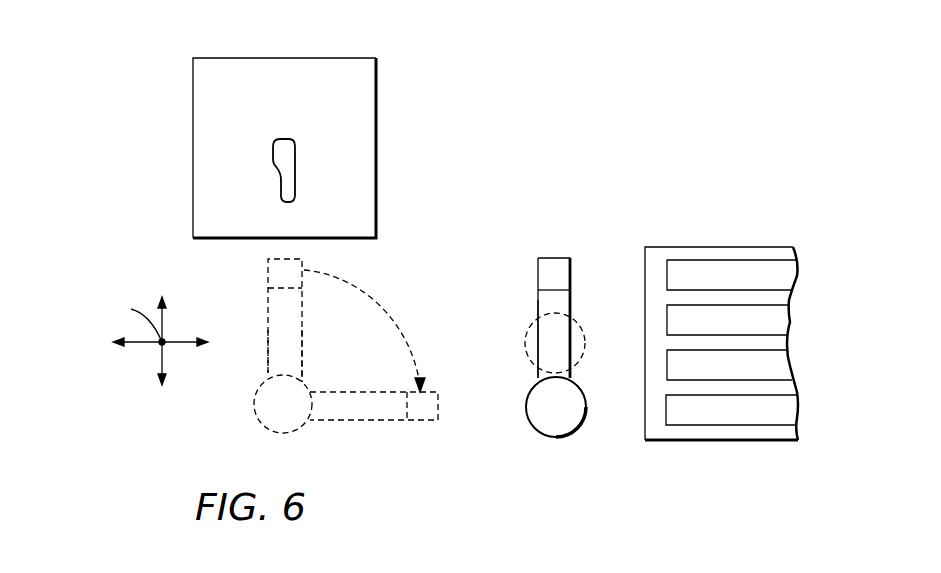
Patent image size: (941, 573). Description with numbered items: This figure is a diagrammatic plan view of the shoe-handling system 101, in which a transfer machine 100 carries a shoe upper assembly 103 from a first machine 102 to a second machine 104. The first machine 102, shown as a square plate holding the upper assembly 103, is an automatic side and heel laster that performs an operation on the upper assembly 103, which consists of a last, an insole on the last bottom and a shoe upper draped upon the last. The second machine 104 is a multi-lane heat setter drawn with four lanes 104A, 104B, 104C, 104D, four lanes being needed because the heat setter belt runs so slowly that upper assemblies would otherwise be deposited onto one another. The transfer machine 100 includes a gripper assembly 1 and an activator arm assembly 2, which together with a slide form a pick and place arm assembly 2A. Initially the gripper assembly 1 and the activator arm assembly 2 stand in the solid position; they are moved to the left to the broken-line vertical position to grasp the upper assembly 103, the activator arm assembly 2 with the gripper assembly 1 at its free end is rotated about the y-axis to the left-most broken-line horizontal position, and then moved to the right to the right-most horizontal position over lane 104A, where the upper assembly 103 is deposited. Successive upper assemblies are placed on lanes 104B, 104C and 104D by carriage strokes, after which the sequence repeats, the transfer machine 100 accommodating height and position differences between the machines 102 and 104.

The gripper assembly 1 is at (304, 262).
The activator arm assembly 2 is at (356, 392).
The pick and place arm assembly 2A is at (283, 433).
The transfer machine 100 is at (519, 212).
The system 101 is at (170, 419).
The first machine 102 is at (320, 60).
The shoe upper assembly 103 is at (285, 137).
The second machine 104 is at (718, 440).
The lane 104A is at (783, 412).
The lane 104B is at (777, 368).
The lane 104C is at (775, 323).
The lane 104D is at (783, 282).